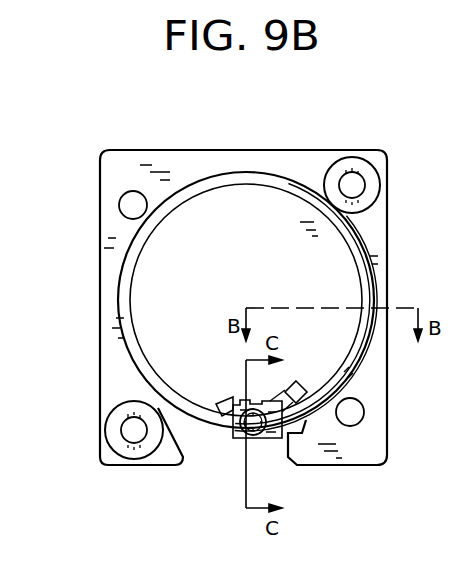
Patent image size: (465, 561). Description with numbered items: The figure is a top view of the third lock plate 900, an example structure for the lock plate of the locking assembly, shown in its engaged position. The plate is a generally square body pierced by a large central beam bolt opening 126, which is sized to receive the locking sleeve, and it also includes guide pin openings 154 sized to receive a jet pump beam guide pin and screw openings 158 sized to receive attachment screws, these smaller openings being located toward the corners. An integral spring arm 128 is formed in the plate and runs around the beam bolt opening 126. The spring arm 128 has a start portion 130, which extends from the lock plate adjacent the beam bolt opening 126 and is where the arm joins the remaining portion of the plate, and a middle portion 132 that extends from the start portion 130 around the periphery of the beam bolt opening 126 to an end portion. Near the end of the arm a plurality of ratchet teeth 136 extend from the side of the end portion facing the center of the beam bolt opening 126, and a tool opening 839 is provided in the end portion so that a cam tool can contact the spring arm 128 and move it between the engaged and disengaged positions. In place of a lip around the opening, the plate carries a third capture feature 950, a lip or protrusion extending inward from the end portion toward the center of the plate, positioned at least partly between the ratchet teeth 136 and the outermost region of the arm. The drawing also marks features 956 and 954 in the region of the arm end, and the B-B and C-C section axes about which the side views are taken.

The third lock plate 900 is at (82, 137).
The guide pin opening 154 is at (133, 190).
The screw opening 158 is at (355, 158).
The middle portion 132 is at (284, 172).
The spring arm 128 is at (247, 182).
The beam bolt opening 126 is at (252, 278).
The start portion 130 is at (366, 340).
The clamp block 956 is at (330, 430).
The third capture feature 950 is at (291, 381).
The ratchet teeth 136 is at (243, 398).
The tool opening 839 is at (258, 440).
The clamp gap 954 is at (229, 437).